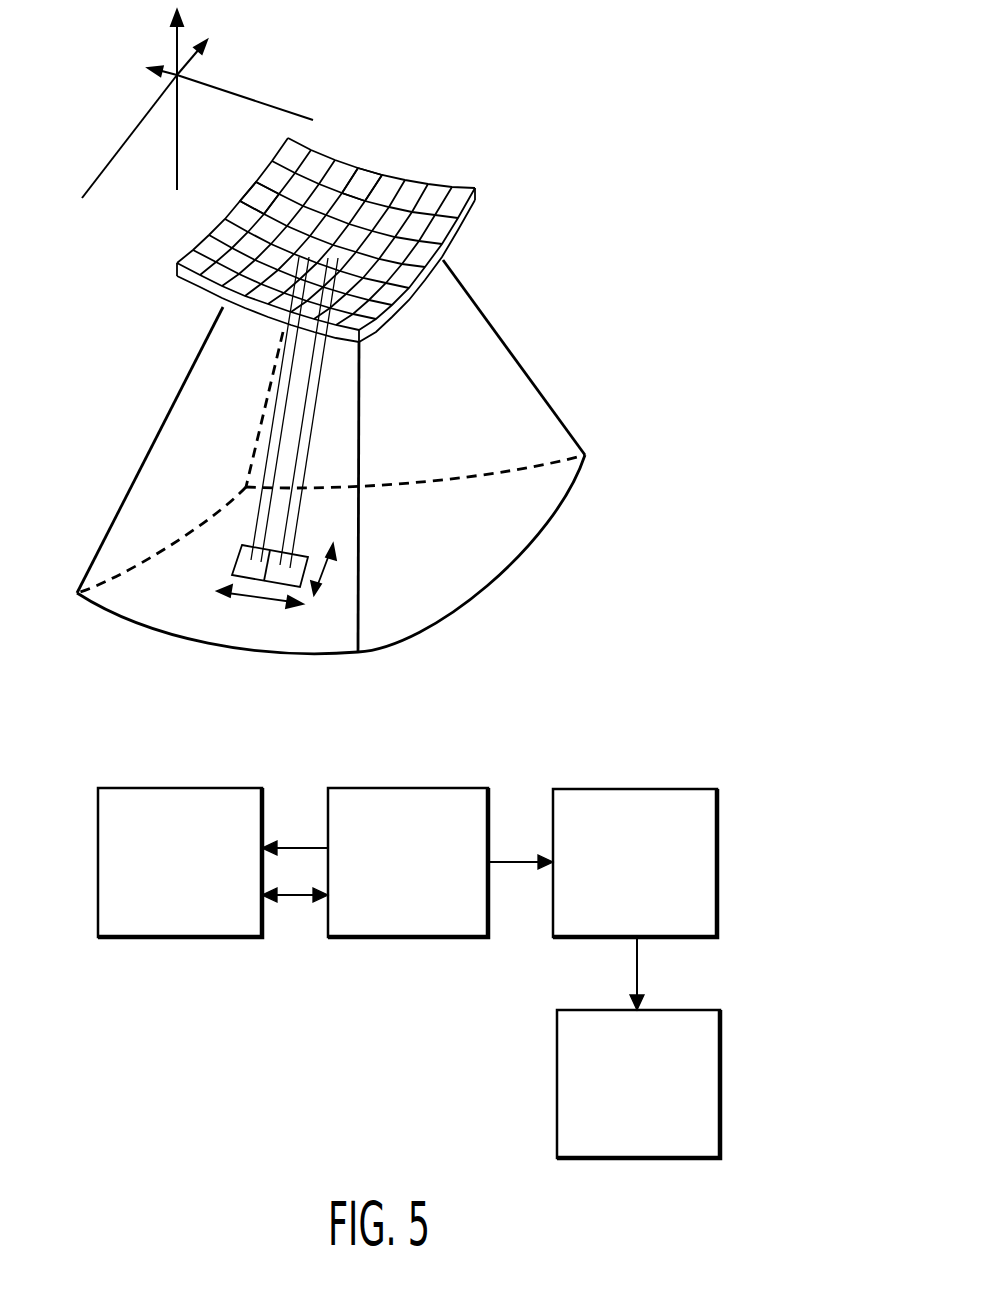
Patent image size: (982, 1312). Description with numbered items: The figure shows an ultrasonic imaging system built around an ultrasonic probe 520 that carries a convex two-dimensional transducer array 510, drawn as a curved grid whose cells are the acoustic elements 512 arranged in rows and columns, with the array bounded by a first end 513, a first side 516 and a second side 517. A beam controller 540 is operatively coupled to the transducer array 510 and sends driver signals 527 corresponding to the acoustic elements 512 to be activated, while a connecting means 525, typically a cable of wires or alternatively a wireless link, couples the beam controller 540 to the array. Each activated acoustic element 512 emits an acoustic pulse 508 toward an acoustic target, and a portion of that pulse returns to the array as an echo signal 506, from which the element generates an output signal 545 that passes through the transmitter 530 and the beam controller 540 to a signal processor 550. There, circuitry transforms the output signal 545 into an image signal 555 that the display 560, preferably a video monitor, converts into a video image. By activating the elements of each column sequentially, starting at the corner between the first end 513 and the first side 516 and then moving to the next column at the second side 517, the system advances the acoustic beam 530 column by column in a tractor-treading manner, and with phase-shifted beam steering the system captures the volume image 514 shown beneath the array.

The two-dimensional transducer array 510 is at (367, 332).
The acoustic elements 512 is at (329, 237).
The first end 513 is at (250, 193).
The second side 517 is at (365, 173).
The first side 516 is at (197, 287).
The volume image 514 is at (492, 558).
The acoustic beam 530 is at (236, 518).
The acoustic pulse 508 is at (300, 430).
The echo signal 506 is at (317, 413).
The ultrasonic probe 520 is at (185, 788).
The beam controller 540 is at (430, 788).
The signal processor 550 is at (663, 789).
The display 560 is at (557, 1063).
The driver signals 527 is at (297, 847).
The connecting means 525 is at (293, 898).
The output signal 545 is at (517, 863).
The image signal 555 is at (635, 980).